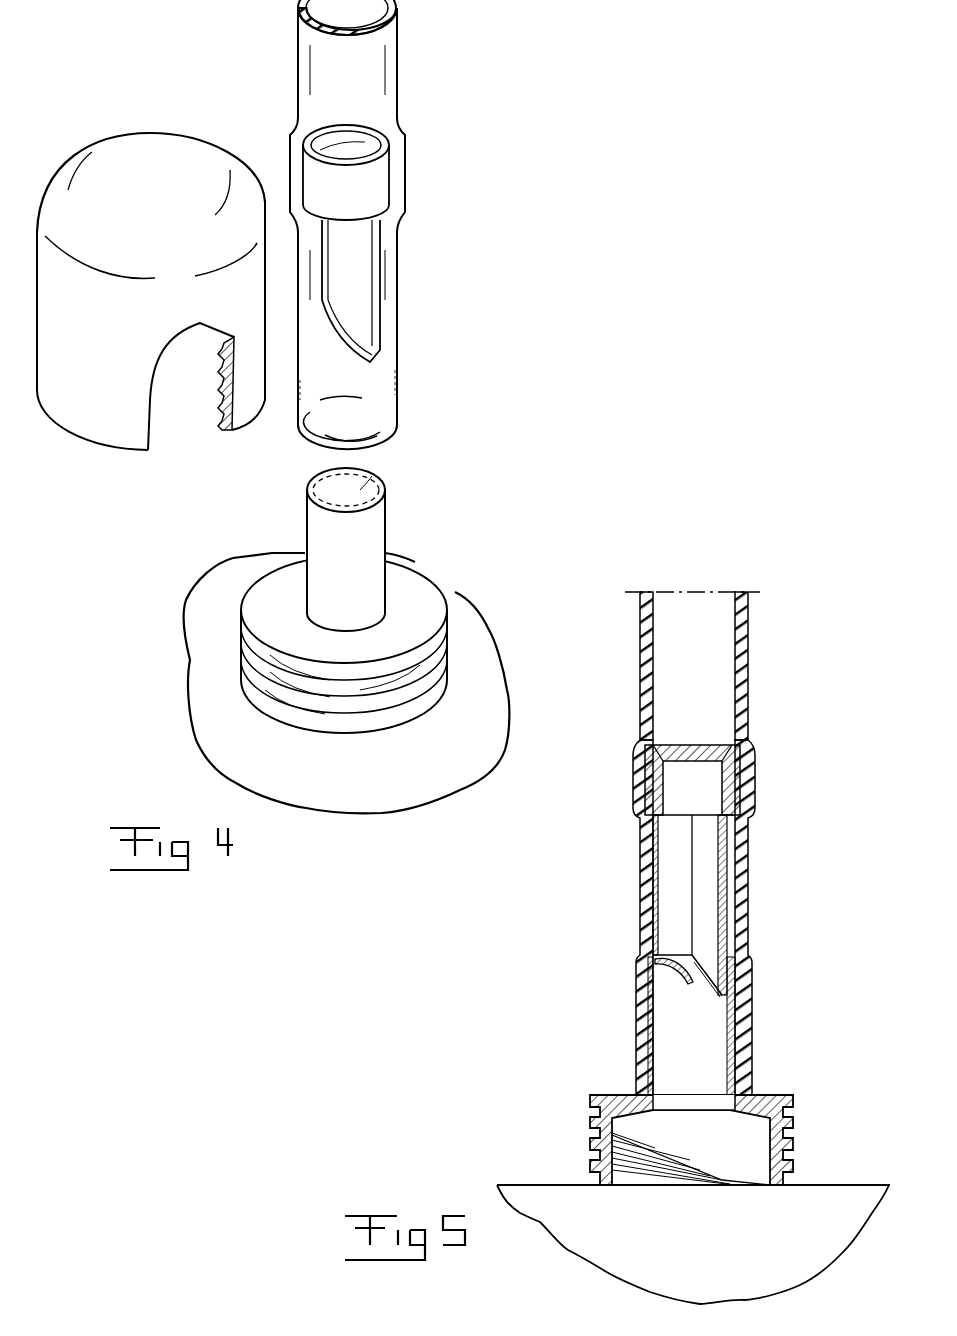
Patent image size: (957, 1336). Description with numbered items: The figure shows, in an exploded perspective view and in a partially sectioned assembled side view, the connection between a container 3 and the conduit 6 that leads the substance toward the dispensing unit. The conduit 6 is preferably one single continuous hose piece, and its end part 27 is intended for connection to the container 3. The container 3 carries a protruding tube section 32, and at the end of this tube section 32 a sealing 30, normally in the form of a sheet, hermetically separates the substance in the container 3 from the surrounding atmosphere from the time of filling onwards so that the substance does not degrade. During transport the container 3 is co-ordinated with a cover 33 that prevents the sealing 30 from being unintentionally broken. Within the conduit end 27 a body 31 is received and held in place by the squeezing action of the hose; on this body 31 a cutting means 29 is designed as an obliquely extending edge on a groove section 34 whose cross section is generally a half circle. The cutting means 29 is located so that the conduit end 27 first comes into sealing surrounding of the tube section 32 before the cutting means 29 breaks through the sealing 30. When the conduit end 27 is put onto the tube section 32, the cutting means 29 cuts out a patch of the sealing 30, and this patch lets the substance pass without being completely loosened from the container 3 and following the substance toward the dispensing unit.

In FIG. 4, the container 3 is at (430, 780).
In FIG. 5, the container 3 is at (541, 1208).
In FIG. 4, the conduit 6 is at (378, 68).
In FIG. 4, the end part of the conduit 27 is at (378, 400).
In FIG. 4, the cutting means 29 is at (343, 342).
In FIG. 4, the sealing 30 is at (385, 482).
In FIG. 5, the sealing 30 is at (688, 978).
In FIG. 4, the body 31 is at (368, 190).
In FIG. 4, the protruding tube section 32 is at (373, 541).
In FIG. 4, the cover 33 is at (97, 418).
In FIG. 4, the groove section 34 is at (355, 272).